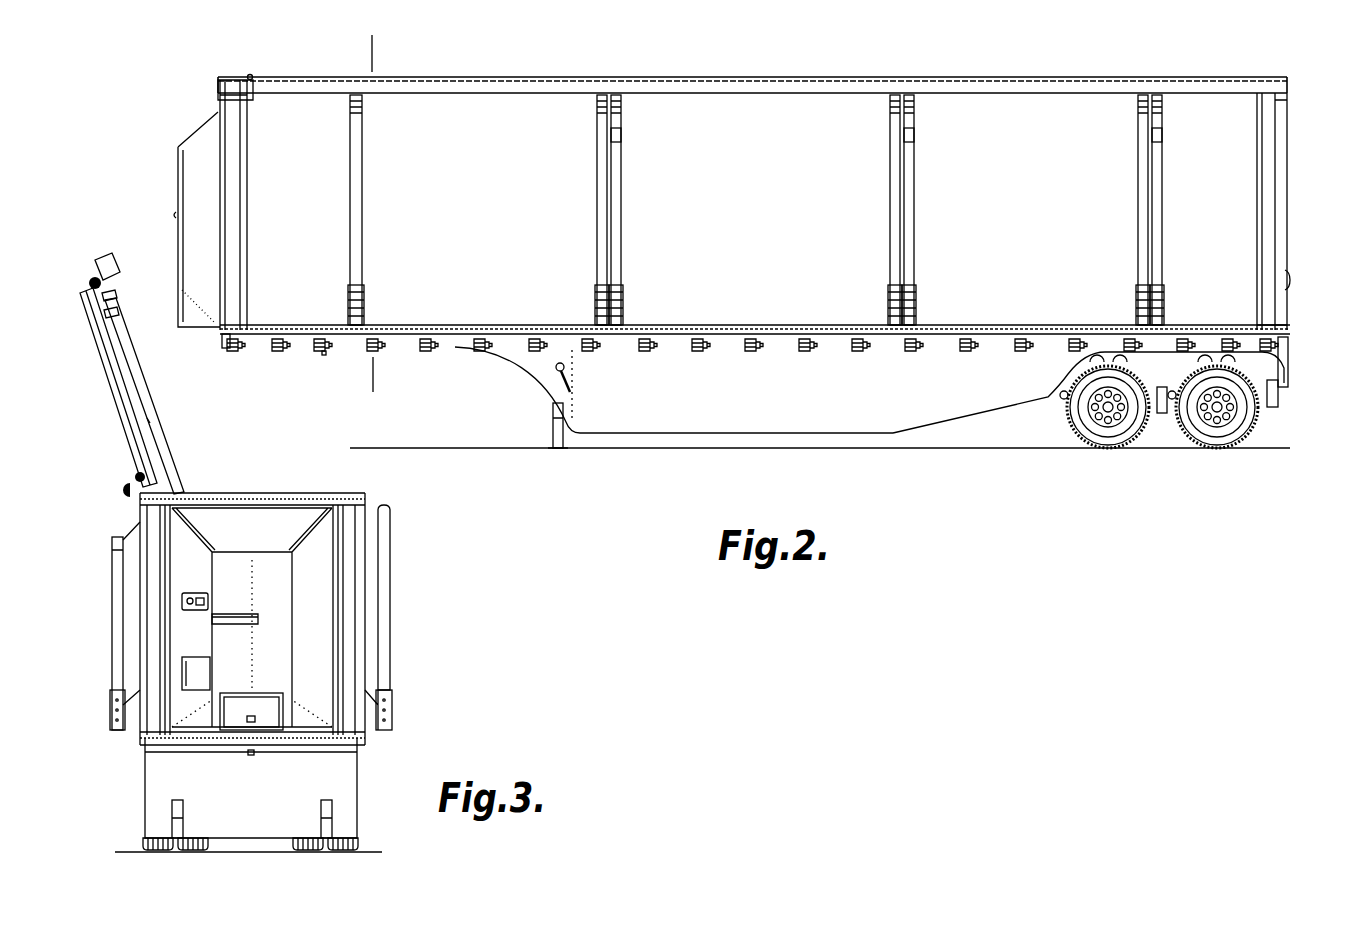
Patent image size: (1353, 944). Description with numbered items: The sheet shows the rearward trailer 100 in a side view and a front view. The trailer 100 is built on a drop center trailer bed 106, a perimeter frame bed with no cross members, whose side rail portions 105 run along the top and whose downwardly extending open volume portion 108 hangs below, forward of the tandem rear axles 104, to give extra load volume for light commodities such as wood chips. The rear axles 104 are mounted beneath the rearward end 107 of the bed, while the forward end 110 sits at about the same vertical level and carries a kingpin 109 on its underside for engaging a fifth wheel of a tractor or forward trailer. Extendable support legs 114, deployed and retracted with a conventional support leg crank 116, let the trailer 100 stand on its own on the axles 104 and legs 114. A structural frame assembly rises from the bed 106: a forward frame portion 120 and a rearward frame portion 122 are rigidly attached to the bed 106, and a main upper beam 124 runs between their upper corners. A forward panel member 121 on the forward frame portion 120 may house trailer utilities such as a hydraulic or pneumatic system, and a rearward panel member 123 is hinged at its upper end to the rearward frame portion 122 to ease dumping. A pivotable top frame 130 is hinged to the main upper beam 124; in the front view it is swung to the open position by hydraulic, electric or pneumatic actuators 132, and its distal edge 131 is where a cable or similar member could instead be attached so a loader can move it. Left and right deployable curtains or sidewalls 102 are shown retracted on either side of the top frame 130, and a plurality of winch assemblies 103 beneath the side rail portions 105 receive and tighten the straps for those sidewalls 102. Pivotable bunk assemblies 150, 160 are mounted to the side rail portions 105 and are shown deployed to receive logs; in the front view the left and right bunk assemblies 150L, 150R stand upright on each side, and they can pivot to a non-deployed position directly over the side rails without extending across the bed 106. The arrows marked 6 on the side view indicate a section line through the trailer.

In FIG. 2, the section line 6- 6 is at (373, 377).
In FIG. 2, the rearward trailer 100 is at (1253, 68).
In FIG. 3, the rearward trailer 100 is at (410, 700).
In FIG. 3, the deployable curtains or sidewalls 102 is at (93, 278).
In FIG. 2, the winch assemblies 103 is at (645, 353).
In FIG. 2, the tandem rear axles 104 is at (1150, 445).
In FIG. 2, the side rail portions 105 is at (436, 330).
In FIG. 3, the side rail portions 105 is at (132, 739).
In FIG. 2, the trailer bed 106 is at (727, 441).
In FIG. 3, the trailer bed 106 is at (265, 845).
In FIG. 2, the rearward end 107 is at (1260, 330).
In FIG. 2, the downwardly extending open volume portion 108 is at (935, 415).
In FIG. 2, the kingpin 109 is at (333, 355).
In FIG. 2, the forward end 110 is at (278, 360).
In FIG. 2, the extendable support legs 114 is at (553, 435).
In FIG. 3, the extendable support legs 114 is at (172, 808).
In FIG. 2, the support leg crank 116 is at (560, 370).
In FIG. 2, the forward frame portion 120 is at (233, 120).
In FIG. 2, the forward panel member 121 is at (200, 140).
In FIG. 3, the forward panel member 121 is at (230, 542).
In FIG. 2, the rearward frame portion 122 is at (1270, 112).
In FIG. 2, the rearward panel member 123 is at (1282, 173).
In FIG. 2, the main upper beam 124 is at (1039, 71).
In FIG. 3, the main upper beam 124 is at (134, 475).
In FIG. 2, the pivotable top frame 130 is at (1123, 87).
In FIG. 3, the pivotable top frame 130 is at (95, 348).
In FIG. 3, the distal edge 131 is at (88, 292).
In FIG. 3, the actuators 132 is at (166, 453).
In FIG. 2, the pivotable bunk assemblies 150 is at (368, 126).
In FIG. 3, the pivotable bunk assemblies 150 is at (396, 573).
In FIG. 3, the left bunk assembly 150L is at (112, 632).
In FIG. 3, the right bunk assembly 150R is at (393, 632).
In FIG. 2, the pivotable bunk assemblies 160 is at (628, 119).